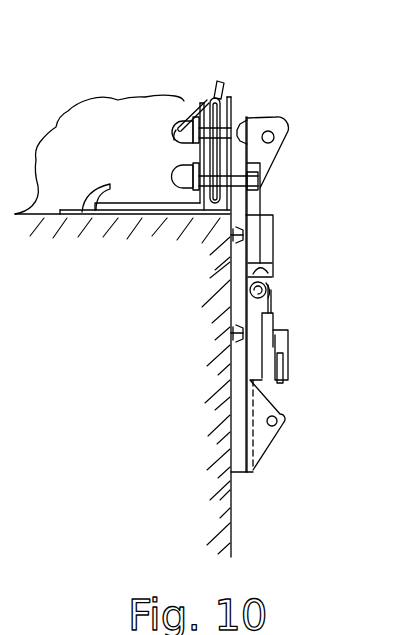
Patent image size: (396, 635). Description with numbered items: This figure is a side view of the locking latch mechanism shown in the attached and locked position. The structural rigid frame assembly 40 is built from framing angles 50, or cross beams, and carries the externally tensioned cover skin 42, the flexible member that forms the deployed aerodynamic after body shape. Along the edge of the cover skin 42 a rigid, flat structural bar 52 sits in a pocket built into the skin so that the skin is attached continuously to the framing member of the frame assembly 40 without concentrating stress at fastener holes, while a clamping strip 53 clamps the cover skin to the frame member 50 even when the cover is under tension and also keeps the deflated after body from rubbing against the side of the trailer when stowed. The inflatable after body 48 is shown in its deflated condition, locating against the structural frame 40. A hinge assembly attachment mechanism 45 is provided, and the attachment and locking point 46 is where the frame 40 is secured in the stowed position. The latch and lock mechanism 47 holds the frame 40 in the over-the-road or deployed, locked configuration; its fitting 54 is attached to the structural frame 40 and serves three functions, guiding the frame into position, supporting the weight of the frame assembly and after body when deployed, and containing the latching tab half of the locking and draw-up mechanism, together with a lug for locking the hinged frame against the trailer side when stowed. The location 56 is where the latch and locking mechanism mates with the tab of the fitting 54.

The structural rigid frame assembly 40 is at (111, 186).
The externally tensioned cover skin 42 is at (175, 127).
The hinge assembly attachment mechanism 45 is at (237, 119).
The attachment and locking point 46 is at (285, 125).
The latch and lock mechanism 47 is at (240, 473).
The inflatable after body 48 is at (183, 100).
The framing angles 50 is at (196, 155).
The rigid flat structural bar 52 is at (223, 100).
The clamping strip 53 is at (225, 80).
The fitting 54 is at (258, 190).
The latch mating location 56 is at (272, 305).